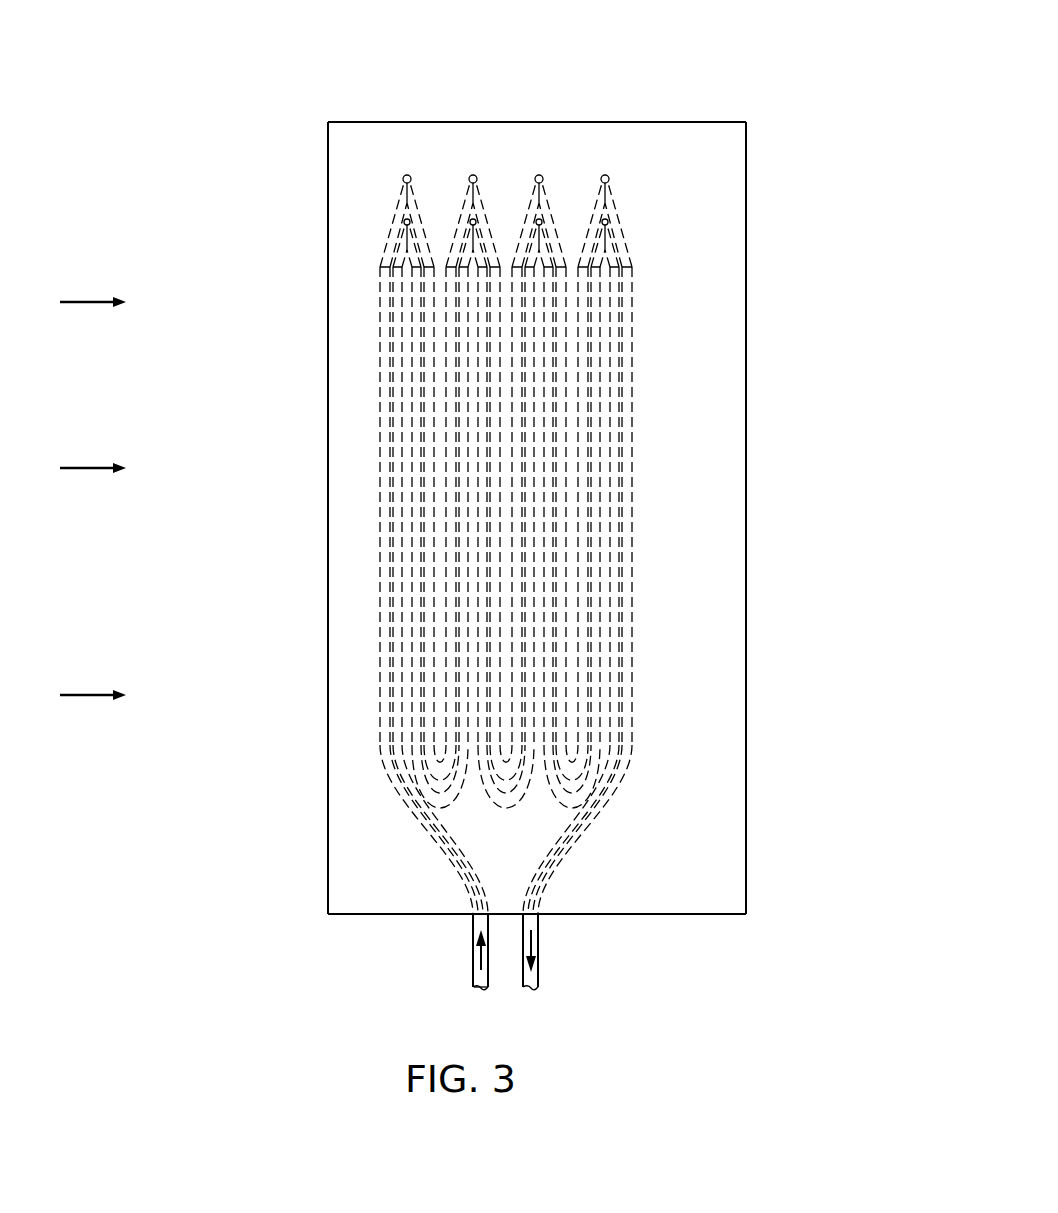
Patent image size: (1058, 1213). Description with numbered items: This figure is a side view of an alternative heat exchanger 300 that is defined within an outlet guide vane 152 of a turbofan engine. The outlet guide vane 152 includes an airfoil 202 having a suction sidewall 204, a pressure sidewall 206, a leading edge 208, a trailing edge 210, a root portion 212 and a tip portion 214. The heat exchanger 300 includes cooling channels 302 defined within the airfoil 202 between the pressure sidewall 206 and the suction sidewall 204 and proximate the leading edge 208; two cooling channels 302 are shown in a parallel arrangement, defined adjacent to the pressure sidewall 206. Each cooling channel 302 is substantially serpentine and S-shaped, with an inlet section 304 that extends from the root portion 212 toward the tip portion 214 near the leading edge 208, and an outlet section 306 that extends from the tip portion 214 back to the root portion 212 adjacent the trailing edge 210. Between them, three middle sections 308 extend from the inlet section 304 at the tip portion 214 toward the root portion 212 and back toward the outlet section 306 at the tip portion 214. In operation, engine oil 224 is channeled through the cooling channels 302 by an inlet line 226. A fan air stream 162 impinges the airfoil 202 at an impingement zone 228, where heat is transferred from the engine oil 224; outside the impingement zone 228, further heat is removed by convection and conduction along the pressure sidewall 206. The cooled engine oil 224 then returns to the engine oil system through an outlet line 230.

The heat exchanger 300 is at (860, 34).
The outlet guide vane 152 is at (774, 102).
The fan air stream 162 is at (72, 300).
The airfoil 202 is at (729, 275).
The suction sidewall 204 is at (712, 780).
The pressure sidewall 206 is at (343, 770).
The leading edge 208 is at (327, 383).
The trailing edge 210 is at (748, 382).
The root portion 212 is at (674, 915).
The tip portion 214 is at (593, 121).
The engine oil 224 is at (473, 940).
The inlet line 226 is at (473, 975).
The impingement zone 228 is at (366, 156).
The outlet line 230 is at (538, 943).
The cooling channel 302 is at (655, 654).
The inlet section 304 is at (380, 506).
The outlet section 306 is at (632, 456).
The middle section 308 is at (560, 795).